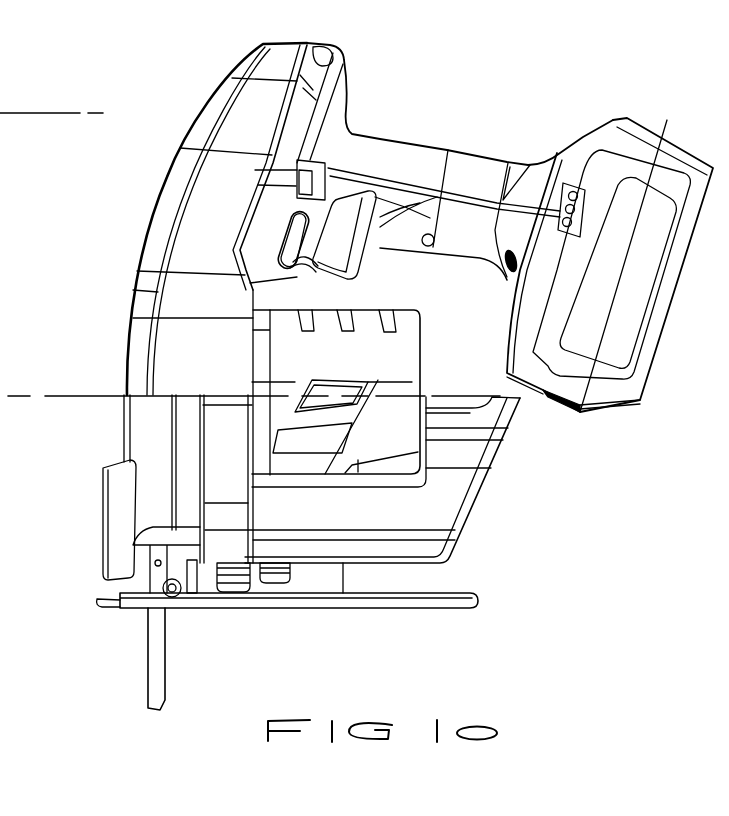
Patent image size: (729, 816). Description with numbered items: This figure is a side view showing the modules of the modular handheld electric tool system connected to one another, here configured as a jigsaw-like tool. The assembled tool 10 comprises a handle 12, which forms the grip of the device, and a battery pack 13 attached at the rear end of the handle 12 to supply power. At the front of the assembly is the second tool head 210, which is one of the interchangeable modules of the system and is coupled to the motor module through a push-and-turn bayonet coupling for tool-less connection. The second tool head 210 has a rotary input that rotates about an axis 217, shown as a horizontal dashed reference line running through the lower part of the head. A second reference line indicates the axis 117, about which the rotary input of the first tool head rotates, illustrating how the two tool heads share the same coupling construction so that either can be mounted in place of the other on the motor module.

The power tool (jigsaw) 10 is at (402, 368).
The handle 12 is at (419, 162).
The battery pack 13 is at (623, 402).
The axis 117 is at (53, 114).
The second tool head 210 is at (180, 190).
The axis 217 is at (90, 397).